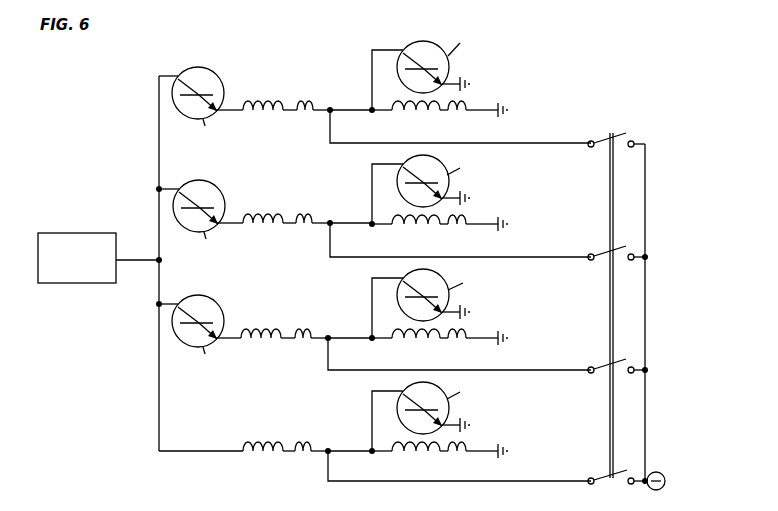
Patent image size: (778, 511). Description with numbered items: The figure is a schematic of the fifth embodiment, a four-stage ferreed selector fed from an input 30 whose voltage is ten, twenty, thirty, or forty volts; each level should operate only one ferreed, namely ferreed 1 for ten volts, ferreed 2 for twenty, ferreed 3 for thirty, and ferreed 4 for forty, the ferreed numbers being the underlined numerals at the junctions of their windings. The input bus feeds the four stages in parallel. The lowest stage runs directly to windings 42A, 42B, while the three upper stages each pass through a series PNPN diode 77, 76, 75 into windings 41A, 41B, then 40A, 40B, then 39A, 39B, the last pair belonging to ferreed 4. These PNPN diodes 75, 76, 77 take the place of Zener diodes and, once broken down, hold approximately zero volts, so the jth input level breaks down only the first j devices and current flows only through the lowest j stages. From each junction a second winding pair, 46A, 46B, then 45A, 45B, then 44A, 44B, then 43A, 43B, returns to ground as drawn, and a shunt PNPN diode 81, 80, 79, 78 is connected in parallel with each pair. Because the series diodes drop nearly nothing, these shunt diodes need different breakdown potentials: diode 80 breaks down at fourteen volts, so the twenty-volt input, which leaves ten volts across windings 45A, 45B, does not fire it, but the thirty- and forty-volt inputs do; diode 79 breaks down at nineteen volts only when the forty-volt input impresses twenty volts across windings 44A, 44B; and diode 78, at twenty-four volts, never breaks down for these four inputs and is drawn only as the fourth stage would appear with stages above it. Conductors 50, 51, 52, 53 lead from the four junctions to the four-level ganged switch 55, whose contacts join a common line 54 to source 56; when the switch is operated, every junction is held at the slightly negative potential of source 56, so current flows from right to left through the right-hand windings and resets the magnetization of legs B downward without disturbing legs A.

The input 30 is at (89, 231).
The PNPN diode 75 is at (222, 85).
The PNPN diode 76 is at (221, 191).
The PNPN diode 77 is at (220, 306).
The PNPN diode 78 is at (405, 87).
The PNPN diode 79 is at (405, 201).
The PNPN diode 80 is at (405, 315).
The PNPN diode 81 is at (403, 423).
The winding 39A is at (249, 98).
The winding 39B is at (306, 98).
The winding 40A is at (250, 210).
The winding 40B is at (306, 210).
The winding 41A is at (248, 325).
The winding 41B is at (304, 325).
The winding 42A is at (221, 437).
The winding 42B is at (305, 437).
The winding 43A is at (474, 120).
The winding 43B is at (406, 120).
The winding 44A is at (474, 235).
The winding 44B is at (406, 235).
The winding 45A is at (474, 349).
The winding 45B is at (406, 349).
The winding 46A is at (474, 462).
The winding 46B is at (406, 462).
The conductor 50 is at (493, 143).
The conductor 51 is at (501, 257).
The conductor 52 is at (497, 370).
The conductor 53 is at (513, 481).
The common line 54 is at (646, 297).
The four-level ganged switch 55 is at (609, 297).
The source 56 is at (663, 489).
The ferreed 1 is at (345, 443).
The ferreed 2 is at (337, 333).
The ferreed 3 is at (338, 219).
The ferreed 4 is at (338, 106).